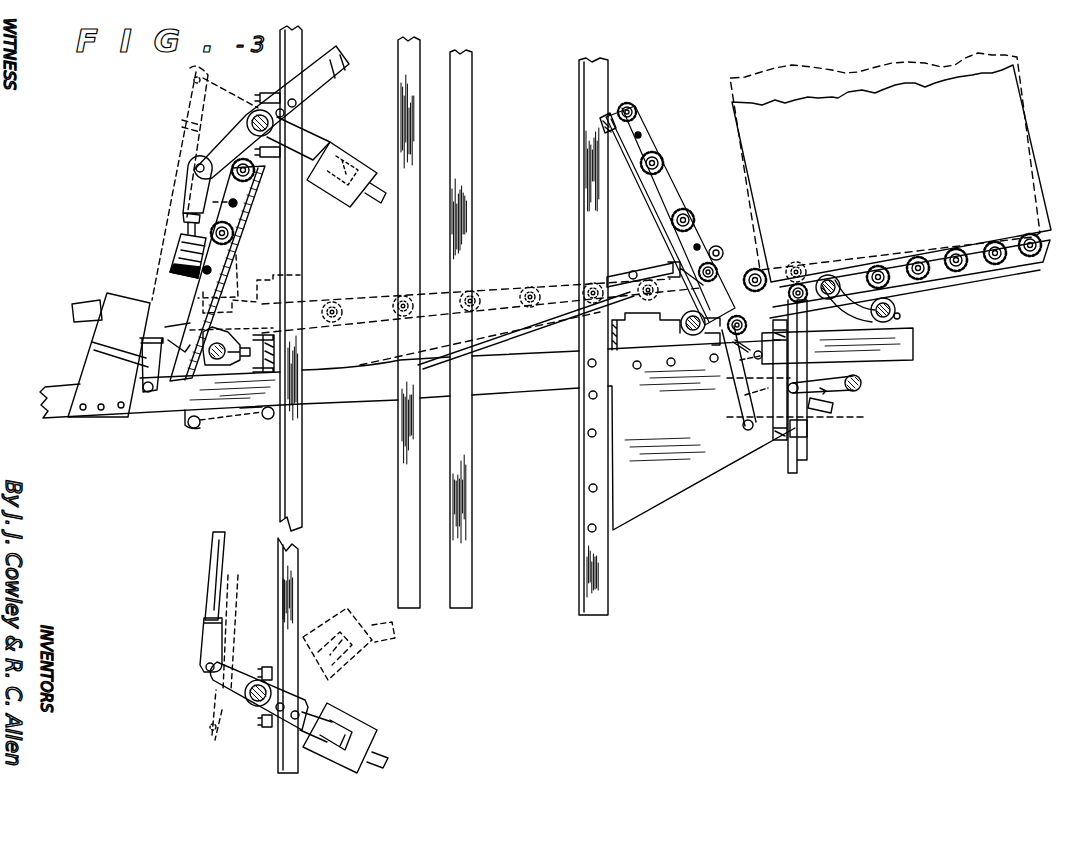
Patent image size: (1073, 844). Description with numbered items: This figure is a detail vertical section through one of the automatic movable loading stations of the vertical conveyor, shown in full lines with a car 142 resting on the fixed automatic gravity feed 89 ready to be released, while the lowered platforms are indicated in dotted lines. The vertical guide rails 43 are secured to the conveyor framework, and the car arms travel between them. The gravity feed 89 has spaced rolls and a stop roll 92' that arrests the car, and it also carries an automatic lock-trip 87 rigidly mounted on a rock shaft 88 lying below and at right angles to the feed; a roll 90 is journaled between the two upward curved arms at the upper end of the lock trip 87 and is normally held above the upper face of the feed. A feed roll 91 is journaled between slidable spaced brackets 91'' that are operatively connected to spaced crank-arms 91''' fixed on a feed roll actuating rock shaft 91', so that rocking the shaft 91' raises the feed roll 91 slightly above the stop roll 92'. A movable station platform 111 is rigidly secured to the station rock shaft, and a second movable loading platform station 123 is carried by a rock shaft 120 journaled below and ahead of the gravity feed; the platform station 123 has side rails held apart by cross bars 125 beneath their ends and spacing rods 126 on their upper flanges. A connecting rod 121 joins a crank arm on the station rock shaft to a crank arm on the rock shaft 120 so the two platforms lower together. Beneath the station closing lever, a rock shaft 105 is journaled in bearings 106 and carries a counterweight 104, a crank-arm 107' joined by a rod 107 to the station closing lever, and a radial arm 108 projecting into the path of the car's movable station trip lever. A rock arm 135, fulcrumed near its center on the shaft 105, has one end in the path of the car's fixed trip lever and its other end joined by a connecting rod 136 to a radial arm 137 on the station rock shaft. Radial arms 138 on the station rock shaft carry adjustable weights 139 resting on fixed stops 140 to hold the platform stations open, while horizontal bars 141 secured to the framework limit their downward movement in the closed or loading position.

The guide rails 43 is at (447, 610).
The connecting rod 121 is at (536, 318).
The rock arm 135 is at (320, 80).
The horizontal bars 141 is at (282, 338).
The movable station platform 111 is at (237, 218).
The connecting rod 136 is at (193, 193).
The radial arms 138 is at (84, 300).
The weights 139 is at (125, 300).
The fixed stops 140 is at (86, 366).
The radial arm 137 is at (163, 380).
The car 142 is at (892, 152).
The fixed automatic gravity feed 89 is at (1010, 258).
The roll 90 is at (830, 278).
The stop roll 92' is at (776, 262).
The rock shaft 88 is at (893, 305).
The automatic lock-trip 87 is at (845, 313).
The feed roll 91 is at (797, 378).
The feed roll actuating rock shaft 91' is at (847, 385).
The slidable spaced brackets 91'' is at (819, 451).
The crank-arms 91''' is at (836, 420).
The rock shaft 120 is at (690, 338).
The second movable loading platform station 123 is at (676, 202).
The spacing rods 126 is at (647, 136).
The cross bars 125 is at (605, 107).
The rod 107 is at (195, 576).
The rock shaft 105 is at (248, 715).
The crank-arm 107' is at (259, 684).
The bearings 106 is at (266, 728).
The counterweight 104 is at (372, 735).
The radial arm 108 is at (335, 748).